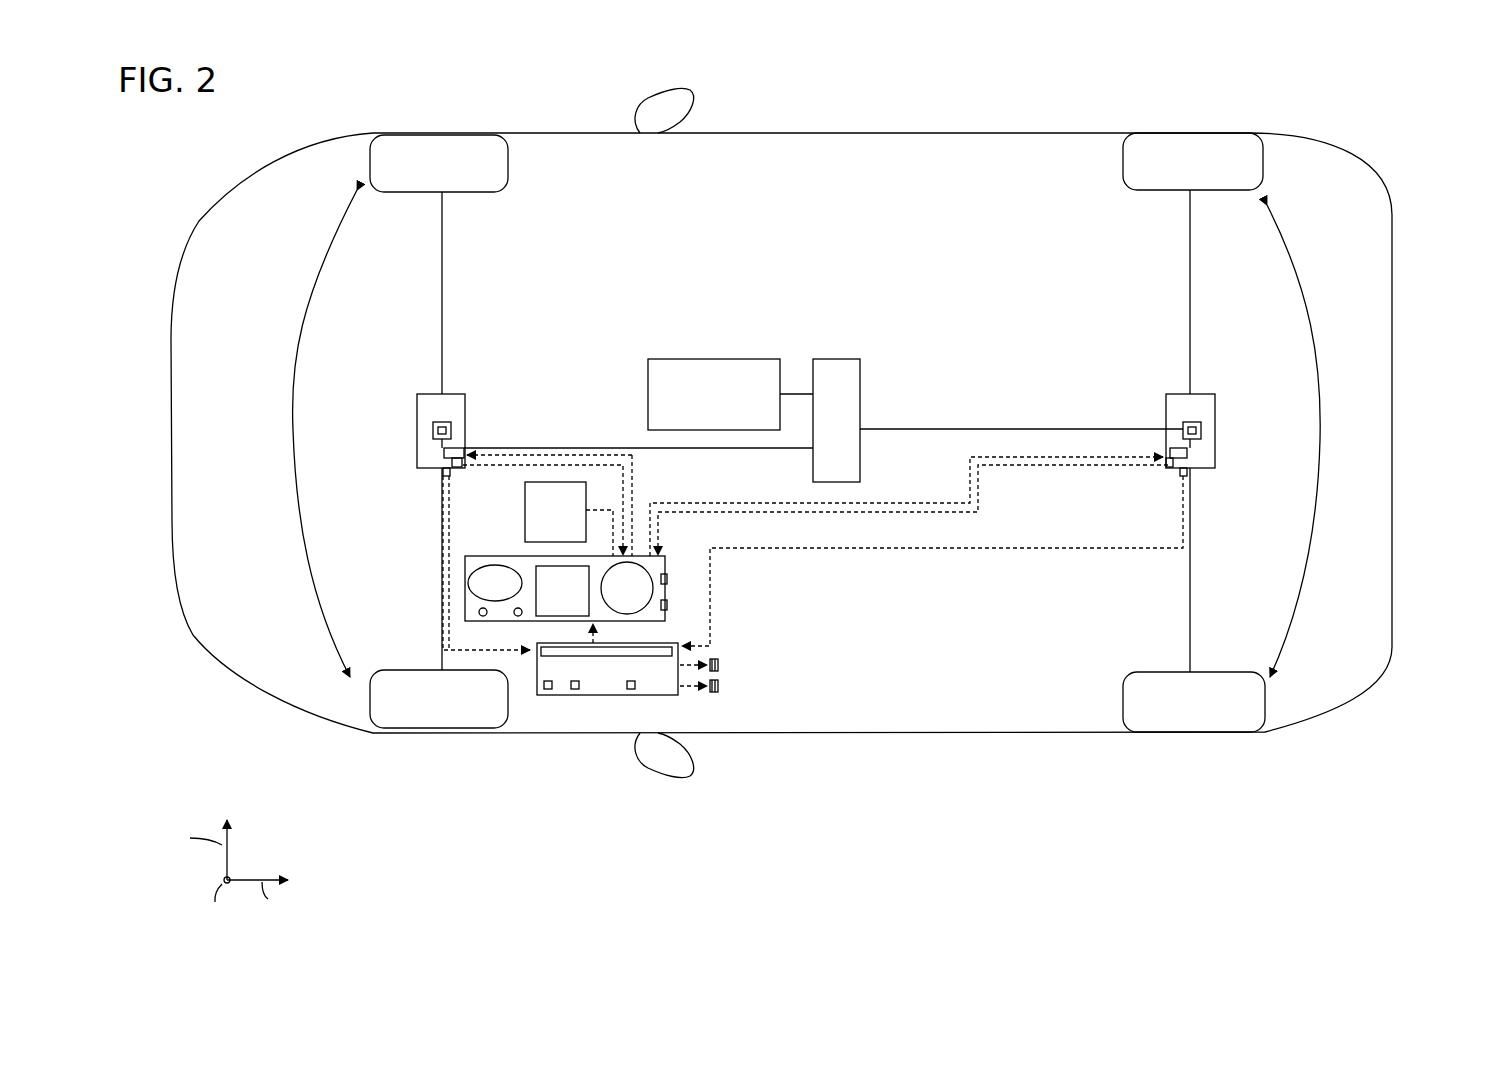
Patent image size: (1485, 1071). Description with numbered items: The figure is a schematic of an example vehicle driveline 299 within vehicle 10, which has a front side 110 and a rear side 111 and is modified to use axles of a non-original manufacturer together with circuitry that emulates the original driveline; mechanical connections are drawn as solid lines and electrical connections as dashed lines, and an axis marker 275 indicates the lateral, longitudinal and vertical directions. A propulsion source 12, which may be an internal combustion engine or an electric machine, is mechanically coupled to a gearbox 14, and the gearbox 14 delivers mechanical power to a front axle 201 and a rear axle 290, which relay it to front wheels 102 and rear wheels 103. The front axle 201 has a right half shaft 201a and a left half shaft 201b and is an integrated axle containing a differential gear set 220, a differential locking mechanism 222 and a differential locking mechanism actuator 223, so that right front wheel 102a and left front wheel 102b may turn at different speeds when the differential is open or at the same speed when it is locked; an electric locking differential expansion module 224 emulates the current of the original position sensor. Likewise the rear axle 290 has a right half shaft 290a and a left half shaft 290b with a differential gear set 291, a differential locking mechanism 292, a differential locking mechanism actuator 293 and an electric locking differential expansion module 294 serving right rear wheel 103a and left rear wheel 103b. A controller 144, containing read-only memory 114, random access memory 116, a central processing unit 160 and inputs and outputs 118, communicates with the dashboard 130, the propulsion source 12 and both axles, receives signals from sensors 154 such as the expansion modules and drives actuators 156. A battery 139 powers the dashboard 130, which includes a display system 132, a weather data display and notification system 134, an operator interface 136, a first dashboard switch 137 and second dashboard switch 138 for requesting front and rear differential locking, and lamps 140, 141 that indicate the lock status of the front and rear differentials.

The vehicle 10 is at (1008, 133).
The front side 110 is at (137, 228).
The rear side 111 is at (1433, 172).
The vehicle driveline 299 is at (838, 268).
The front wheels 102 is at (308, 433).
The right front wheel 102a is at (470, 192).
The left front wheel 102b is at (395, 728).
The rear wheels 103 is at (1317, 441).
The right rear wheel 103a is at (1192, 133).
The left rear wheel 103b is at (1193, 732).
The front axle 201 is at (405, 507).
The right half shaft 201a is at (442, 242).
The left half shaft 201b is at (442, 595).
The rear axle 290 is at (1205, 490).
The right half shaft 290a is at (1190, 328).
The left half shaft 290b is at (1190, 588).
The propulsion source 12 is at (730, 394).
The gearbox 14 is at (823, 420).
The differential gear set 220 is at (451, 425).
The differential locking mechanism 222 is at (464, 452).
The differential locking mechanism actuator 223 is at (460, 468).
The electric locking differential expansion module 224 is at (448, 477).
The differential gear set 291 is at (1201, 425).
The differential locking mechanism 292 is at (1170, 452).
The differential locking mechanism actuator 293 is at (1166, 464).
The electric locking differential expansion module 294 is at (1180, 476).
The battery 139 is at (569, 519).
The dashboard 130 is at (663, 560).
The display system 132 is at (495, 583).
The interactive weather data display and notification system 134 is at (562, 591).
The operator interface 136 is at (627, 588).
The first dashboard switch 137 is at (667, 579).
The second dashboard switch 138 is at (667, 605).
The lamp 140 is at (481, 616).
The lamp 141 is at (516, 616).
The controller 144 is at (607, 669).
The inputs and outputs 118 is at (660, 656).
The read-only memory 114 is at (550, 689).
The random access memory 116 is at (578, 689).
The central processing unit 160 is at (633, 689).
The sensors 154 is at (722, 665).
The actuators 156 is at (722, 686).
The coordinate axes 275 is at (250, 830).